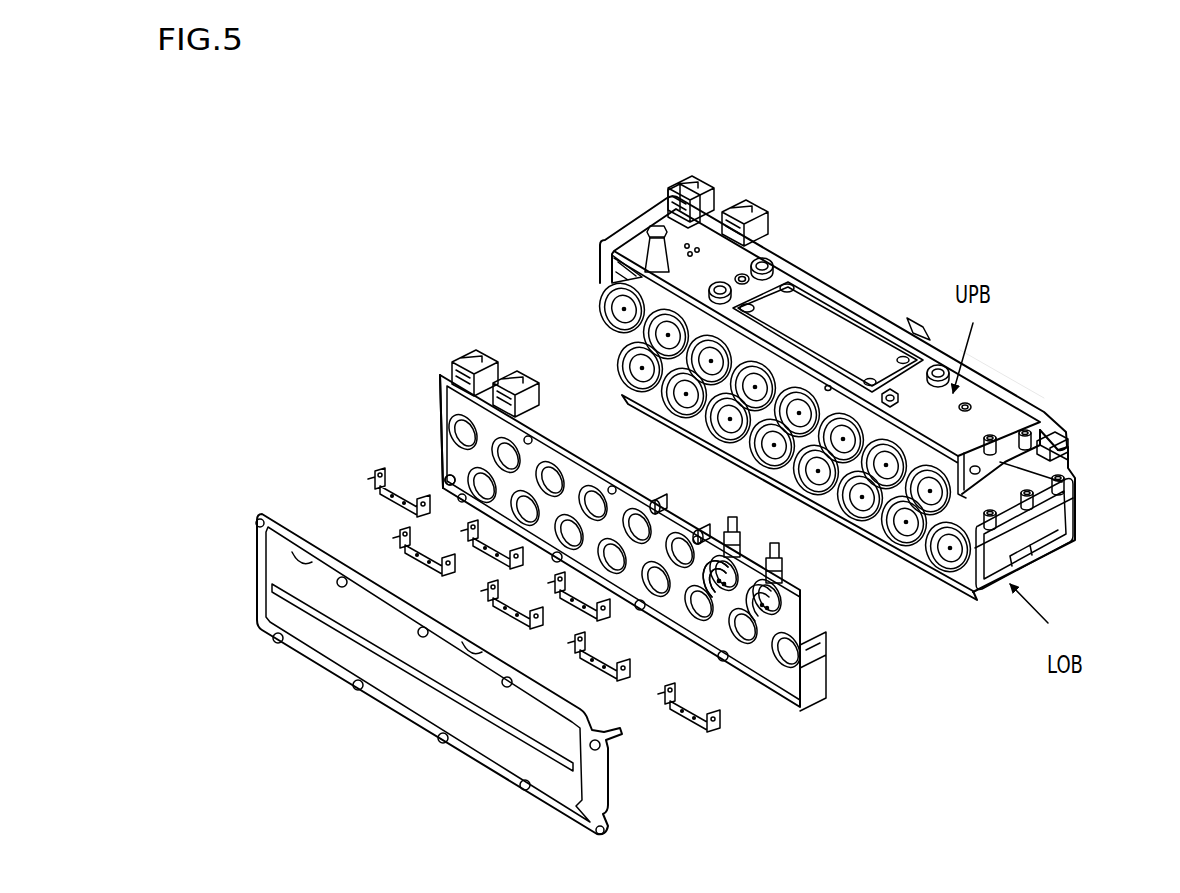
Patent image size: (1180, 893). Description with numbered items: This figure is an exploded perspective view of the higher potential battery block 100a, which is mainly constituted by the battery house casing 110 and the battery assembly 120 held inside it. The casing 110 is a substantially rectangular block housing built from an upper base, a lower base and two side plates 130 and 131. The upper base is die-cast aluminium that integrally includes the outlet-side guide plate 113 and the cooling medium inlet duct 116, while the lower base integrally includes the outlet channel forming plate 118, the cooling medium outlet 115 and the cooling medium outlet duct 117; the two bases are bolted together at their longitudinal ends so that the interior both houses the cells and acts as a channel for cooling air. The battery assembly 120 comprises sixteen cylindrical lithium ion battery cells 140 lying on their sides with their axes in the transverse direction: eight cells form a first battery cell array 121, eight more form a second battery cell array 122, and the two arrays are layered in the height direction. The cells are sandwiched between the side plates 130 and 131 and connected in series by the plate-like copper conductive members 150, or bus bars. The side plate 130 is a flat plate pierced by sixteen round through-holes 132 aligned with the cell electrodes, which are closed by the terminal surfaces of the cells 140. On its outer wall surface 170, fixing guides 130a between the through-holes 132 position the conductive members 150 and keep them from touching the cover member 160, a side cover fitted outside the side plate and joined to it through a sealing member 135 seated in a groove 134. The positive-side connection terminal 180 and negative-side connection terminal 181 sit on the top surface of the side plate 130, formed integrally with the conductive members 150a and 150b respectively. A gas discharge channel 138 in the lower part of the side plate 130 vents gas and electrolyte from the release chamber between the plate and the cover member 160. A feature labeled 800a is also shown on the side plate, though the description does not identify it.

The higher potential battery block 100a is at (479, 218).
The battery house casing 110 is at (851, 333).
The outlet-side guide plate 113 is at (1048, 437).
The cooling medium outlet 115 is at (1032, 566).
The cooling medium inlet duct 116 is at (625, 240).
The cooling medium outlet duct 117 is at (1067, 530).
The outlet channel forming plate 118 is at (930, 575).
The battery assembly 120 is at (804, 485).
The first battery cell array 121 is at (748, 332).
The second battery cell array 122 is at (703, 423).
The side plate 130 is at (620, 564).
The fixing guides 130a is at (570, 490).
The side plate 131 is at (1027, 400).
The through-holes 132 is at (722, 600).
The groove 134 is at (440, 410).
The sealing member 135 is at (803, 672).
The gas discharge channel 138 is at (448, 475).
The lithium ion battery cell 140 is at (952, 557).
The conductive members 150 is at (700, 727).
The conductive member 150a is at (765, 620).
The conductive member 150b is at (730, 602).
The cover member 160 is at (478, 740).
The outer wall surface 170 is at (668, 507).
The battery module side connection terminal 180 is at (783, 556).
The battery module side connection terminal 181 is at (731, 517).
The rib 800a is at (655, 610).